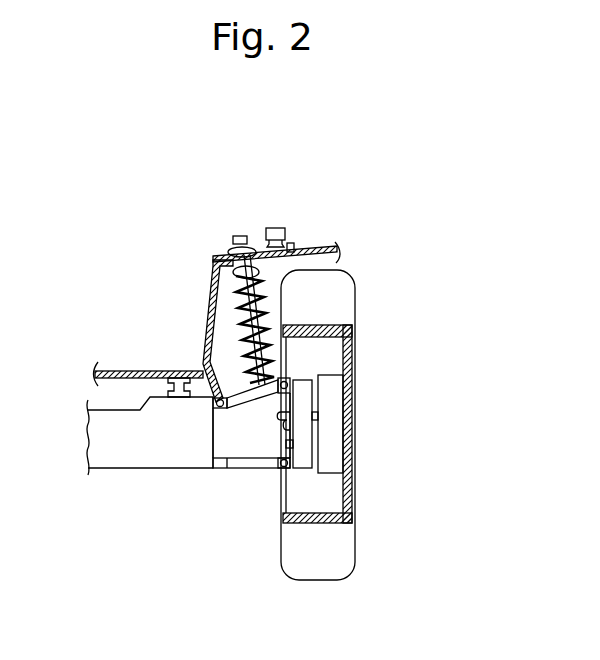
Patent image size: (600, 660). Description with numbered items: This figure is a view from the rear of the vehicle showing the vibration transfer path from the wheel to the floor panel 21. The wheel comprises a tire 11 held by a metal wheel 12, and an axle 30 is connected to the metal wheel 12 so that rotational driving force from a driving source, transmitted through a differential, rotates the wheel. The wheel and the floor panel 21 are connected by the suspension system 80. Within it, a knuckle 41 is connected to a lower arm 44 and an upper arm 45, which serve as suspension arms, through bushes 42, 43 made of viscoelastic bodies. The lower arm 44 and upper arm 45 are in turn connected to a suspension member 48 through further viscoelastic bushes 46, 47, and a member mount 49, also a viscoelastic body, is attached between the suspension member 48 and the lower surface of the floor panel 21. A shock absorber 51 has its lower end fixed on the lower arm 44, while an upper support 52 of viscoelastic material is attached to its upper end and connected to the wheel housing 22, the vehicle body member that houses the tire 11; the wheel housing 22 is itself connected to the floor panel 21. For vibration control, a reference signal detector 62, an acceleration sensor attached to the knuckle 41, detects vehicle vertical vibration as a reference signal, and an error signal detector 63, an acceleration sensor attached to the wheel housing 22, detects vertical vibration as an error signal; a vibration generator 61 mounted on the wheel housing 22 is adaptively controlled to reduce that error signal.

The tire 11 is at (355, 553).
The metal wheel 12 is at (352, 508).
The floor panel 21 is at (96, 370).
The wheel housing 22 is at (322, 252).
The axle 30 is at (337, 465).
The knuckle 41 is at (305, 400).
The bush 42 is at (284, 470).
The bush 43 is at (286, 382).
The lower arm 44 is at (248, 470).
The upper arm 45 is at (203, 366).
The bush 46 is at (218, 470).
The bush 47 is at (218, 400).
The suspension member 48 is at (127, 470).
The member mount 49 is at (178, 397).
The shock absorber 51 is at (232, 283).
The upper support 52 is at (228, 242).
The vibration generator 61 is at (277, 228).
The reference signal detector 62 is at (293, 446).
The error signal detector 63 is at (293, 243).
The suspension system 80 is at (108, 483).